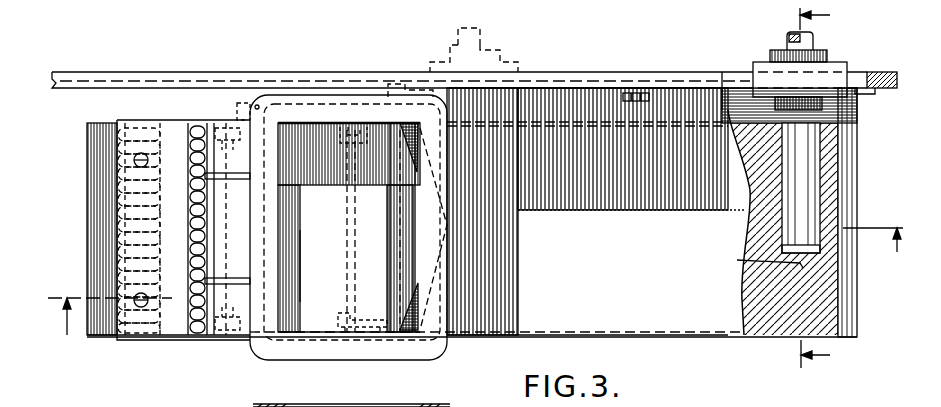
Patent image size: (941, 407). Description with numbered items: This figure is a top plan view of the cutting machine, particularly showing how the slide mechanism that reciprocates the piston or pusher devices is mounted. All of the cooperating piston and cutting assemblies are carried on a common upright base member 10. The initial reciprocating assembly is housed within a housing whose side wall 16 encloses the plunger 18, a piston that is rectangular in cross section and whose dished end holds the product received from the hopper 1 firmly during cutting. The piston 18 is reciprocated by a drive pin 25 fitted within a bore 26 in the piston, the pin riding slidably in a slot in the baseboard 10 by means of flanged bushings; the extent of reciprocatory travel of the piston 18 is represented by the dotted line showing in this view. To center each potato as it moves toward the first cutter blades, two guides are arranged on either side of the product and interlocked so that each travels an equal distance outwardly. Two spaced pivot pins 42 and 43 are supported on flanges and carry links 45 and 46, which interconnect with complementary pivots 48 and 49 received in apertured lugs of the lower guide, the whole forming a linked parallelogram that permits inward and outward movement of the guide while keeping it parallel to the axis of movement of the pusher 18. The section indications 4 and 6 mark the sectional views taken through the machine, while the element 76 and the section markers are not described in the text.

The hopper 1 is at (452, 269).
The base member 10 is at (132, 77).
The side wall 16 is at (776, 340).
The plunger 18 is at (833, 188).
The drive pin 25 is at (810, 160).
The bore 26 is at (737, 260).
The pivot pin 42 is at (296, 242).
The pivot pin 43 is at (395, 262).
The link 45 is at (238, 128).
The link 46 is at (372, 126).
The complementary pivot 48 is at (205, 233).
The complementary pivot 49 is at (347, 258).
The plate 76 is at (347, 406).
The section line 4- 4 is at (475, 295).
The section line 6- 6 is at (825, 188).